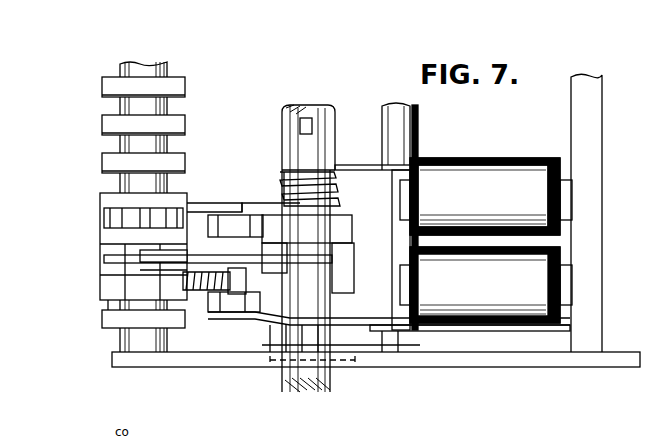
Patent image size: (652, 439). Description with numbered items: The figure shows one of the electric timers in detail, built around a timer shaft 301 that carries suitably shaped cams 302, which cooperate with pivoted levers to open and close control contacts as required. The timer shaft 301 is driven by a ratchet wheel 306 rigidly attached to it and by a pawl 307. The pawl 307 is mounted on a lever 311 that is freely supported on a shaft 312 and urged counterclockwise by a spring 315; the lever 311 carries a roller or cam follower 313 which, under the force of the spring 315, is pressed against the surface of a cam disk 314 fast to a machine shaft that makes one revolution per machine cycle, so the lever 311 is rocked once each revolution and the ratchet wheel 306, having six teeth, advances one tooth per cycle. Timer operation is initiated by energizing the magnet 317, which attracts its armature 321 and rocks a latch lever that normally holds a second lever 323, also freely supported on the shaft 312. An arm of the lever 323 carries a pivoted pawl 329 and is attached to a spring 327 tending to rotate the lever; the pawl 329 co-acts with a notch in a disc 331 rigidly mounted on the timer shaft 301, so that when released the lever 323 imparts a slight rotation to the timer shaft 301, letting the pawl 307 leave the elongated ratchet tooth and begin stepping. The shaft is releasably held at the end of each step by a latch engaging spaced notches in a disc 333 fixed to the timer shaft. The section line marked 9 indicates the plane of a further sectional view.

The timer shaft 301 is at (175, 108).
The cams 302 is at (180, 87).
The ratchet wheel 306 is at (125, 226).
The pawl 307 is at (118, 222).
The lever 311 is at (192, 204).
The shaft 312 is at (336, 122).
The roller or cam follower 313 is at (228, 215).
The cam disk 314 is at (343, 217).
The spring 315 is at (282, 175).
The magnet 317 is at (485, 178).
The armature 321 is at (414, 160).
The lever 323 is at (258, 309).
The spring 327 is at (213, 302).
The pawl 329 is at (200, 298).
The disc 331 is at (108, 292).
The disc 333 is at (128, 280).
The section line 9- 9 is at (72, 246).